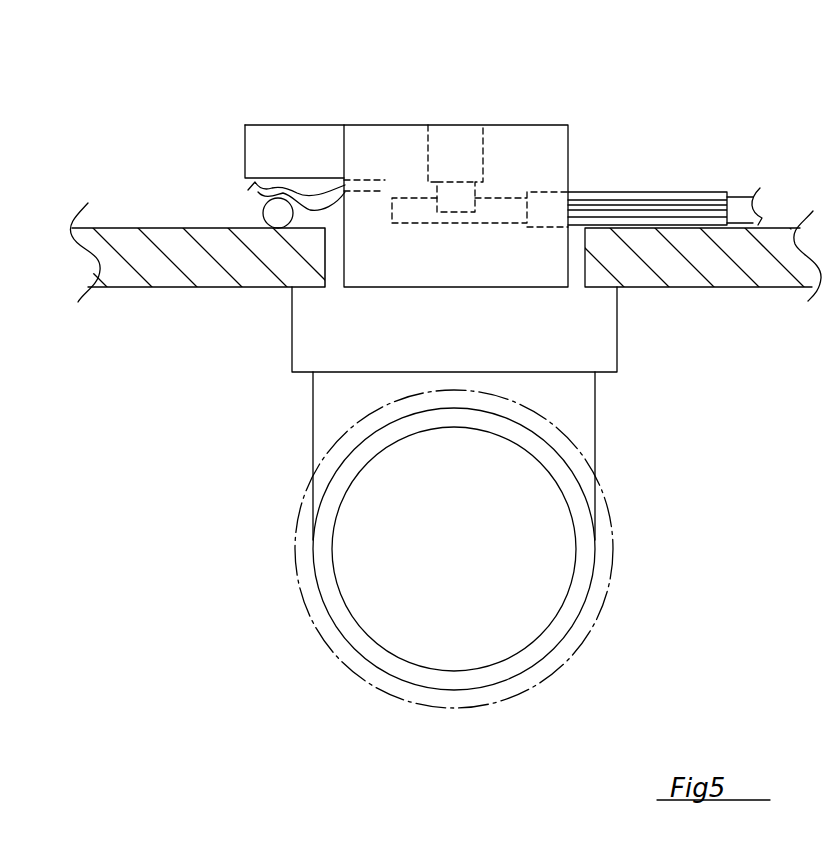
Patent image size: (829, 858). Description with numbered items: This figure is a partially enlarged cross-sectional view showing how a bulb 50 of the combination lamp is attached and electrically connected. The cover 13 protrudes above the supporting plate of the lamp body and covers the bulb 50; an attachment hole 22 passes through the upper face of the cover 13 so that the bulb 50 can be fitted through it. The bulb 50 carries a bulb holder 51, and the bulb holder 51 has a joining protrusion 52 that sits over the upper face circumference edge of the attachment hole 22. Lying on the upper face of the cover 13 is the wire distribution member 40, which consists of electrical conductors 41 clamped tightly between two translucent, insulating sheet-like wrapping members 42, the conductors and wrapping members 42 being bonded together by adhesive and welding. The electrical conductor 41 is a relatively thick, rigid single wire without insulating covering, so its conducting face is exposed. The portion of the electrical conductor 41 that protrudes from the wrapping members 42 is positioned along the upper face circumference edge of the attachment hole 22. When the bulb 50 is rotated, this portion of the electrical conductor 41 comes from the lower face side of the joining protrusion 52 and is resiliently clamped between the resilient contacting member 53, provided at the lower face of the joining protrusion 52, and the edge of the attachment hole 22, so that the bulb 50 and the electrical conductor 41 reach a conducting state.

The cover 13 is at (133, 246).
The attachment hole 22 is at (328, 262).
The wire distribution member 40 is at (761, 153).
The electrical conductor 41 is at (277, 213).
The wrapping member 42 is at (664, 222).
The bulb 50 is at (612, 570).
The bulb holder 51 is at (382, 143).
The joining protrusion 52 is at (288, 145).
The resilient contacting member 53 is at (253, 192).